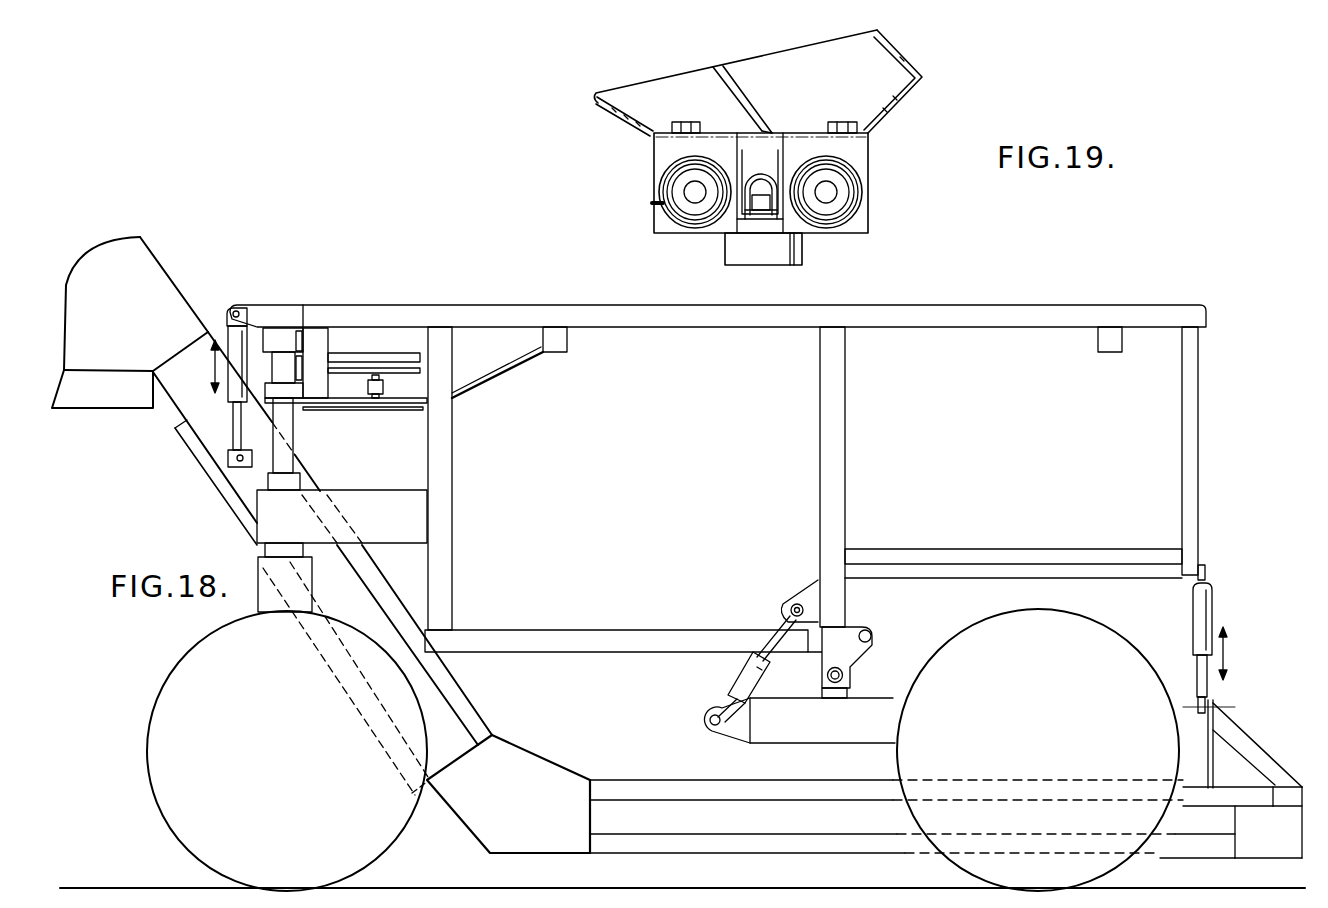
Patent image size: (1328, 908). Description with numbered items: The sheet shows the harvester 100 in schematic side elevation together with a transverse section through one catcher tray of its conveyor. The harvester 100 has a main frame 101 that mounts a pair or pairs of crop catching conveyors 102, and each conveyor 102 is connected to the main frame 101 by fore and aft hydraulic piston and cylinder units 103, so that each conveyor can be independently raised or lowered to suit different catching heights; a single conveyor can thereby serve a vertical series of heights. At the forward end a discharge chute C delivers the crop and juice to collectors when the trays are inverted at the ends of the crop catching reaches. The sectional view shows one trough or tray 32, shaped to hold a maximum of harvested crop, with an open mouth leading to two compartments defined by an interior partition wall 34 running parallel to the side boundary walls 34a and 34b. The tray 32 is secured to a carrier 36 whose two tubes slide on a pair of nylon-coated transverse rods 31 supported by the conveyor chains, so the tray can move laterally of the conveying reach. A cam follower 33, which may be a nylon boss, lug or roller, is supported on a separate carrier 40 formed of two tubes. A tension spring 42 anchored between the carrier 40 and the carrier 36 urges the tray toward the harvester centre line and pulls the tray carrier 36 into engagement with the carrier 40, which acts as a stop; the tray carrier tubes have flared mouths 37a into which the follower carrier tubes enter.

In FIG. 19, the transverse rods 31 is at (687, 208).
In FIG. 19, the trough or tray 32 is at (678, 76).
In FIG. 19, the cam follower 33 is at (800, 248).
In FIG. 19, the interior partition wall 34 is at (737, 72).
In FIG. 19, the side boundary wall 34a is at (614, 113).
In FIG. 19, the side boundary wall 34b is at (905, 60).
In FIG. 19, the carrier 36 is at (660, 152).
In FIG. 19, the flared mouths 37a is at (658, 183).
In FIG. 19, the carrier 40 is at (652, 203).
In FIG. 19, the tension spring 42 is at (762, 175).
In FIG. 18, the harvester 100 is at (1203, 473).
In FIG. 18, the main frame 101 is at (1188, 542).
In FIG. 18, the crop catching conveyors 102 is at (630, 818).
In FIG. 18, the hydraulic piston and cylinder units 103 is at (228, 343).
In FIG. 18, the discharge chute C is at (122, 408).